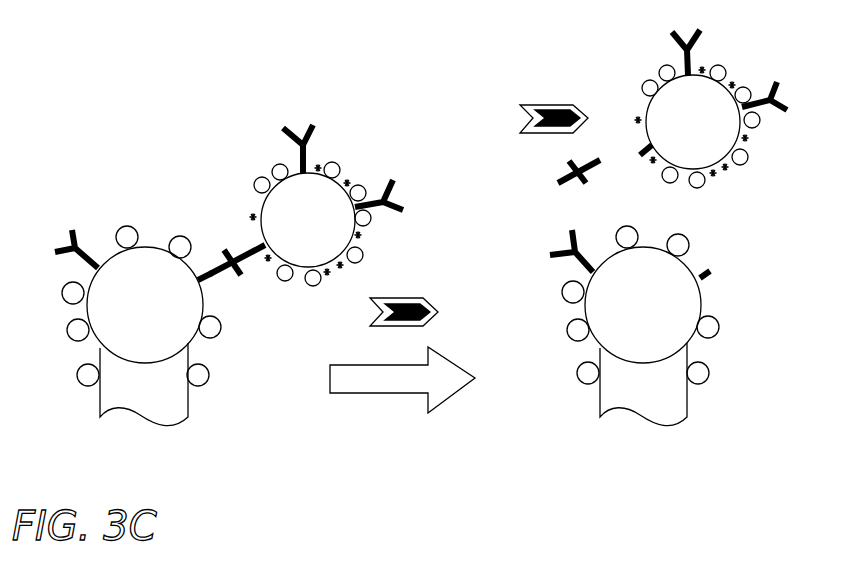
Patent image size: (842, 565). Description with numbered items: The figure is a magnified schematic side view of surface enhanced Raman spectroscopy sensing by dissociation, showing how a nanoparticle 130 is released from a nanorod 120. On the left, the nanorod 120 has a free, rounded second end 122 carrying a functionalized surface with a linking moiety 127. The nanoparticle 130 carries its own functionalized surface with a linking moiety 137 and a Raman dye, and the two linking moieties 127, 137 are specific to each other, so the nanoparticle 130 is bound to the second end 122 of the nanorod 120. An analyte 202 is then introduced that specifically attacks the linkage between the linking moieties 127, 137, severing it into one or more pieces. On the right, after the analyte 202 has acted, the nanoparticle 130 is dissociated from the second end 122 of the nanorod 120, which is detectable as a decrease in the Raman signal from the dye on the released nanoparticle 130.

The nanorod 120 is at (226, 359).
The second end 122 is at (147, 247).
The moiety 127 is at (203, 284).
The nanoparticle 130 is at (256, 137).
The moiety 137 is at (245, 242).
The analyte 202 is at (403, 298).